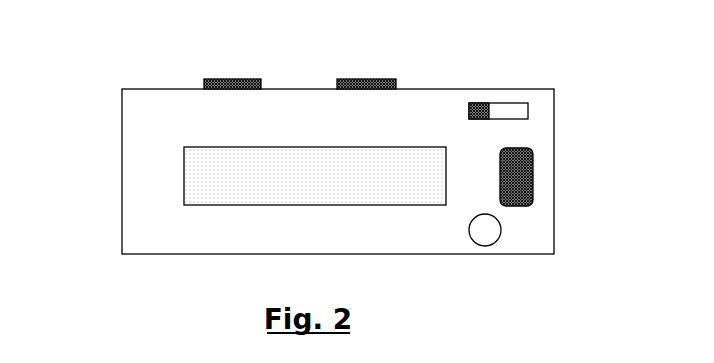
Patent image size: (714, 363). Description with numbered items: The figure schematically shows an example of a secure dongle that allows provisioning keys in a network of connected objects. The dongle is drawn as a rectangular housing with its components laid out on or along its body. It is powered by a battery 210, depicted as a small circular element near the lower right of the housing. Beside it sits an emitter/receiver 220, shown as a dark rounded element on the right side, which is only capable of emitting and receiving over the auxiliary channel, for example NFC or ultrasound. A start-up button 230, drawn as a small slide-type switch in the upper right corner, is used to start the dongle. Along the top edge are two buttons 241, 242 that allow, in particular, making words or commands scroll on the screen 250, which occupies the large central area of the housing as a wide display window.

The battery 210 is at (485, 248).
The emitter/receiver 220 is at (538, 177).
The start-up button 230 is at (501, 100).
The button 241 is at (232, 76).
The button 242 is at (366, 76).
The screen 250 is at (178, 176).